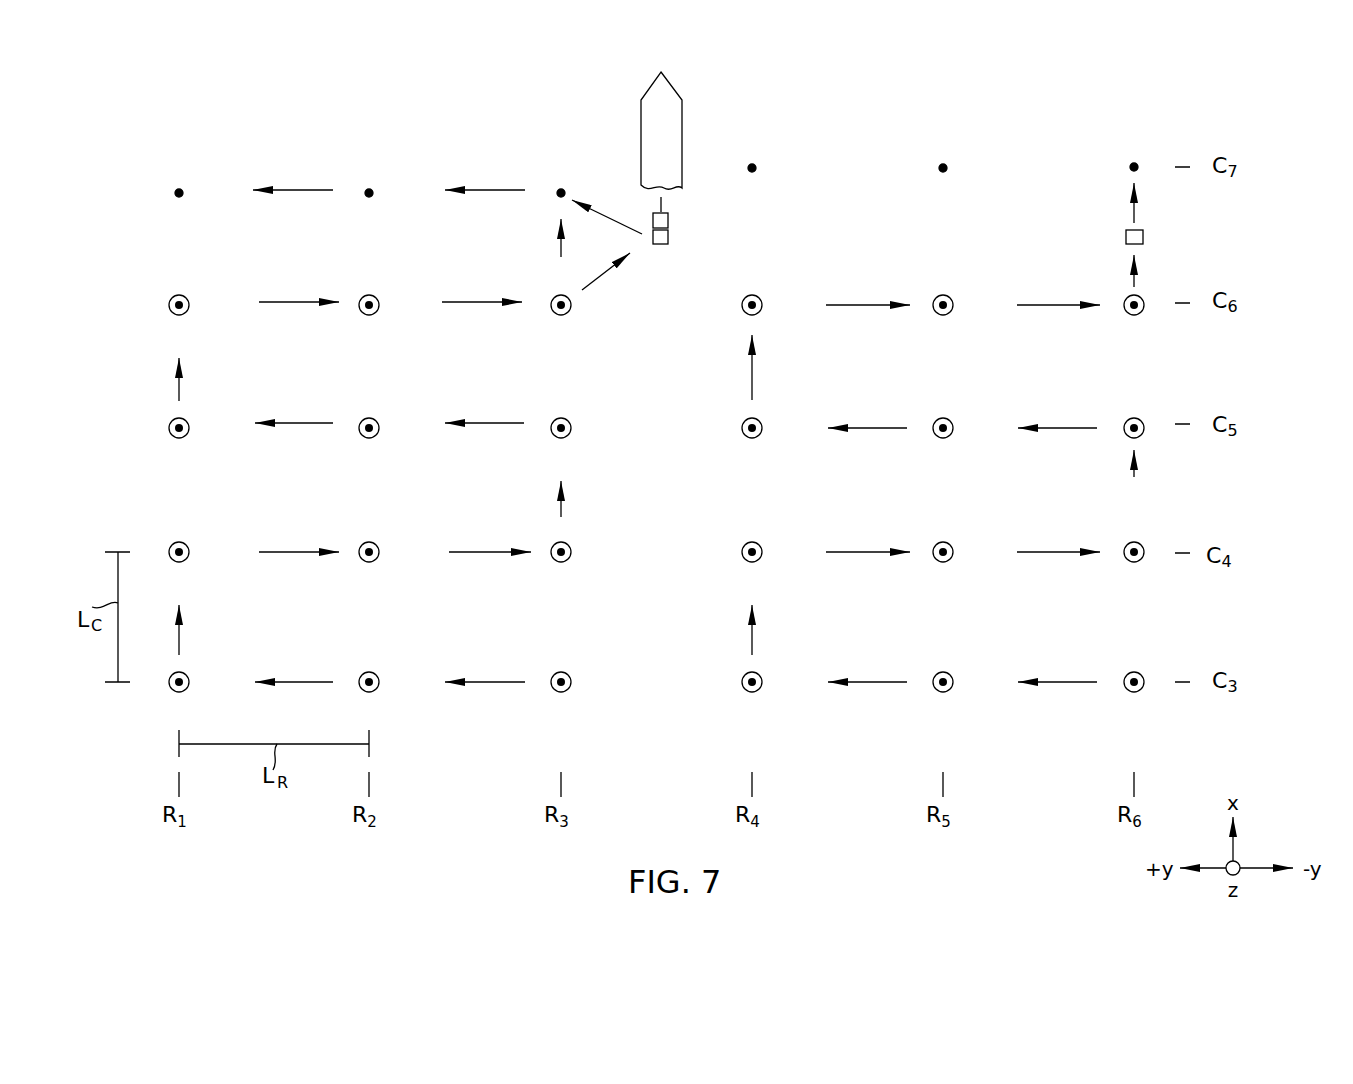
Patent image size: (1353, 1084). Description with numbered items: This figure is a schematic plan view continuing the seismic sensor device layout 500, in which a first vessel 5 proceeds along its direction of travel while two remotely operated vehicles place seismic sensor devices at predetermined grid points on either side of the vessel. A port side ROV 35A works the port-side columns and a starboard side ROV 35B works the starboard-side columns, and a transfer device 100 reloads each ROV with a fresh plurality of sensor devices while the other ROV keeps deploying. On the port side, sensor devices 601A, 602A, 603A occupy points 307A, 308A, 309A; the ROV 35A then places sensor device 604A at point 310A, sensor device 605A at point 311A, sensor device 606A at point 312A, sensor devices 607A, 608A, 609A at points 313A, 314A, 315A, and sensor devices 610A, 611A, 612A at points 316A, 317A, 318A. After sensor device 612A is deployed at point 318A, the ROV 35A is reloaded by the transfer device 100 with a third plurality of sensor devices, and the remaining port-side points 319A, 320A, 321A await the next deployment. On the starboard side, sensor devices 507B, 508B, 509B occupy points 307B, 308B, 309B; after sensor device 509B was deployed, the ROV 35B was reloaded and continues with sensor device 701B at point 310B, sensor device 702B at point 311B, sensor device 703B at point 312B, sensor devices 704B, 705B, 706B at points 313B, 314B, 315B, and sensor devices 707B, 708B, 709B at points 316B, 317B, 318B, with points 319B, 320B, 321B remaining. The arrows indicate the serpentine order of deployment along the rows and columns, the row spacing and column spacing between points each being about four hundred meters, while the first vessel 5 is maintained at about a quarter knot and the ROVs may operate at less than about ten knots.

The first vessel 5 is at (652, 149).
The transfer device 100 is at (668, 222).
The port side ROV 35A is at (668, 237).
The starboard side ROV 35B is at (1143, 237).
The seismic sensor device layout 500 is at (1045, 132).
The point 321A is at (183, 188).
The point 320A is at (373, 188).
The point 319A is at (561, 189).
The point 321B is at (756, 165).
The point 320B is at (947, 165).
The point 319B is at (1138, 164).
The point 316A is at (204, 308).
The point 317A is at (392, 308).
The point 318A is at (534, 305).
The point 315A is at (204, 431).
The point 314A is at (392, 431).
The point 313A is at (561, 429).
The point 310A is at (204, 553).
The point 311A is at (392, 553).
The point 312A is at (583, 549).
The point 309A is at (204, 683).
The point 308A is at (392, 683).
The point 307A is at (583, 683).
The sensor device 610A is at (179, 315).
The sensor device 611A is at (369, 315).
The sensor device 612A is at (553, 313).
The sensor device 609A is at (179, 438).
The sensor device 608A is at (369, 438).
The sensor device 607A is at (554, 435).
The sensor device 604A is at (179, 562).
The sensor device 605A is at (369, 562).
The sensor device 606A is at (561, 562).
The sensor device 603A is at (179, 692).
The sensor device 602A is at (369, 692).
The sensor device 601A is at (561, 692).
The point 316B is at (793, 303).
The point 317B is at (964, 308).
The point 318B is at (1155, 304).
The point 315B is at (775, 431).
The point 314B is at (964, 431).
The point 313B is at (1121, 418).
The point 310B is at (775, 553).
The point 311B is at (964, 553).
The point 312B is at (1172, 555).
The point 309B is at (775, 683).
The point 308B is at (964, 683).
The point 307B is at (1155, 677).
The sensor device 707B is at (760, 312).
The sensor device 708B is at (943, 315).
The sensor device 709B is at (1134, 315).
The sensor device 706B is at (752, 438).
The sensor device 705B is at (943, 438).
The sensor device 704B is at (1094, 439).
The sensor device 701B is at (752, 562).
The sensor device 702B is at (943, 562).
The sensor device 703B is at (1134, 562).
The sensor device 509B is at (752, 692).
The sensor device 508B is at (943, 692).
The sensor device 507B is at (1134, 692).